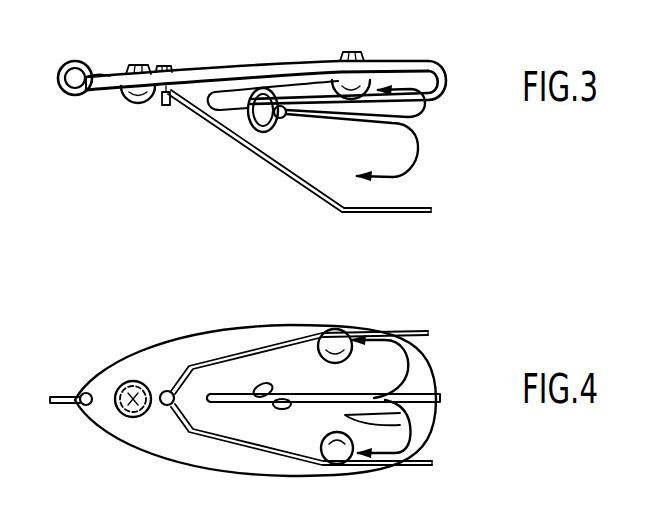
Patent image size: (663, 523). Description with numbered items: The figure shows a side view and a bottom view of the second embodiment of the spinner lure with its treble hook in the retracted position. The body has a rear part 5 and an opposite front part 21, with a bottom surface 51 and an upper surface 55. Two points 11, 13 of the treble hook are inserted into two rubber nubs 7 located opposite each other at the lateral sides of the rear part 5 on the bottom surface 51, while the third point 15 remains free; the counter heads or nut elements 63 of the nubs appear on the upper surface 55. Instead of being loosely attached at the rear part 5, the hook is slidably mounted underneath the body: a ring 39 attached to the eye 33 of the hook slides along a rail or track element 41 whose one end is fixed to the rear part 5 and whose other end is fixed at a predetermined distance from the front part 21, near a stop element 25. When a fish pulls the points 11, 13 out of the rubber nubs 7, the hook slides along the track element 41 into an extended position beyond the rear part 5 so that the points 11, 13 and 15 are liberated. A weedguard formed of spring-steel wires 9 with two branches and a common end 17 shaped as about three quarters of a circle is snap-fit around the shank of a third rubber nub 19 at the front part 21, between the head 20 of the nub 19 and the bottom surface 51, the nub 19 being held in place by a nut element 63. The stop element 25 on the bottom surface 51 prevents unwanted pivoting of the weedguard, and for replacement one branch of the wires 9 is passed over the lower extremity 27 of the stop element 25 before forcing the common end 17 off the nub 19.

In FIG. 3, the rear part 5 is at (427, 61).
In FIG. 3, the rubber nubs 7 is at (338, 80).
In FIG. 4, the rubber nubs 7 is at (327, 332).
In FIG. 3, the spring-steel wires 9 is at (404, 214).
In FIG. 4, the spring-steel wires 9 is at (215, 362).
In FIG. 4, the point 11 is at (359, 335).
In FIG. 3, the point 13 is at (376, 82).
In FIG. 4, the point 13 is at (349, 458).
In FIG. 3, the point 15 is at (357, 178).
In FIG. 4, the point 15 is at (346, 417).
In FIG. 4, the common end 17 is at (127, 386).
In FIG. 3, the rubber nub 19 is at (119, 102).
In FIG. 4, the rubber nub 19 is at (111, 409).
In FIG. 3, the head 20 is at (138, 104).
In FIG. 4, the head 20 is at (130, 418).
In FIG. 3, the front part 21 is at (109, 75).
In FIG. 3, the stop element 25 is at (167, 66).
In FIG. 3, the lower extremity 27 is at (167, 107).
In FIG. 4, the lower extremity 27 is at (168, 390).
In FIG. 3, the eye 33 is at (285, 120).
In FIG. 4, the eye 33 is at (282, 412).
In FIG. 3, the ring 39 is at (253, 131).
In FIG. 4, the ring 39 is at (243, 399).
In FIG. 3, the track element 41 is at (433, 117).
In FIG. 4, the track element 41 is at (431, 389).
In FIG. 4, the bottom surface 51 is at (262, 331).
In FIG. 3, the upper surface 55 is at (255, 66).
In FIG. 3, the nut element 63 is at (137, 65).